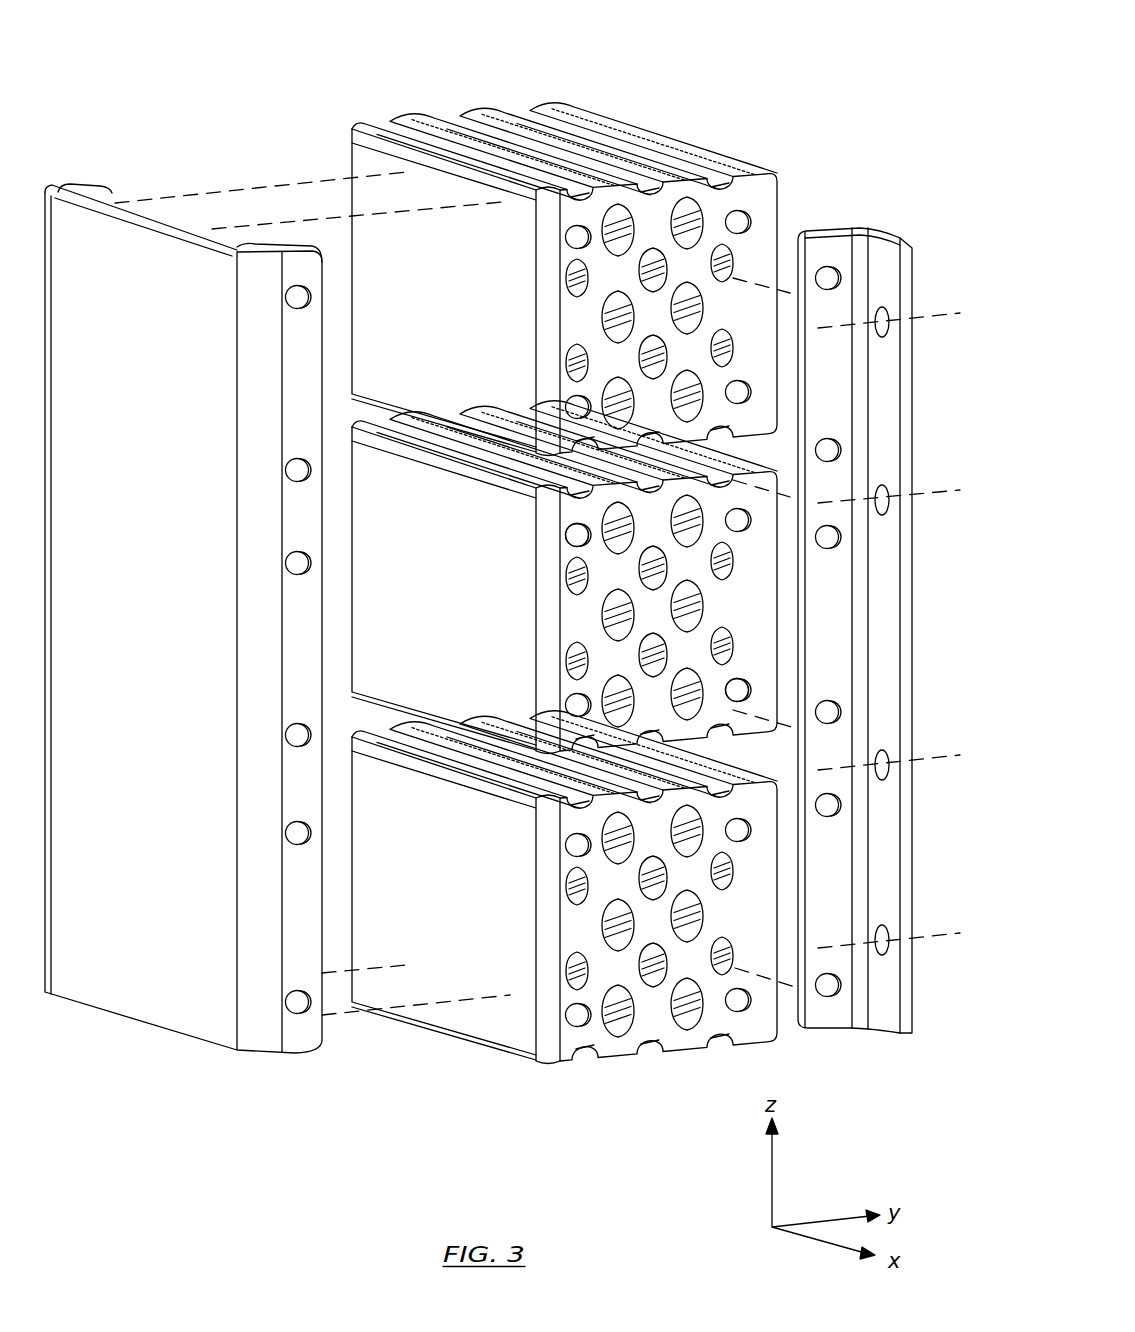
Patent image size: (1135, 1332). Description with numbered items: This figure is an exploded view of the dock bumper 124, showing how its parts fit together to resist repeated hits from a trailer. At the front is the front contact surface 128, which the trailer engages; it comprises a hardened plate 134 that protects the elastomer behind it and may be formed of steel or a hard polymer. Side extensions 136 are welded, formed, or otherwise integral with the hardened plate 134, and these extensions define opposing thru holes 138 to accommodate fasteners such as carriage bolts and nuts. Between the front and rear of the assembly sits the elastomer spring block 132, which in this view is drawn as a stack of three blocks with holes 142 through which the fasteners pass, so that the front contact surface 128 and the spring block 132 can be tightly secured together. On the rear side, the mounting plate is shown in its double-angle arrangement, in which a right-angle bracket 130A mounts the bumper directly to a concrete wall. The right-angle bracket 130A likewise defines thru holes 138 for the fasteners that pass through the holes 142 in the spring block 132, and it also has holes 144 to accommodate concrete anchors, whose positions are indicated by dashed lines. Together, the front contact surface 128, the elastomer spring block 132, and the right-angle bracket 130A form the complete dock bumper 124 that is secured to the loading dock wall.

The dock bumper 124 is at (833, 110).
The front contact surface 128 is at (162, 455).
The right-angle bracket 130A is at (883, 228).
The elastomer spring block 132 is at (464, 300).
The hardened plate 134 is at (135, 217).
The side extensions 136 is at (72, 190).
The thru holes 138 is at (285, 563).
The holes 142 is at (570, 532).
The holes 144 is at (880, 488).